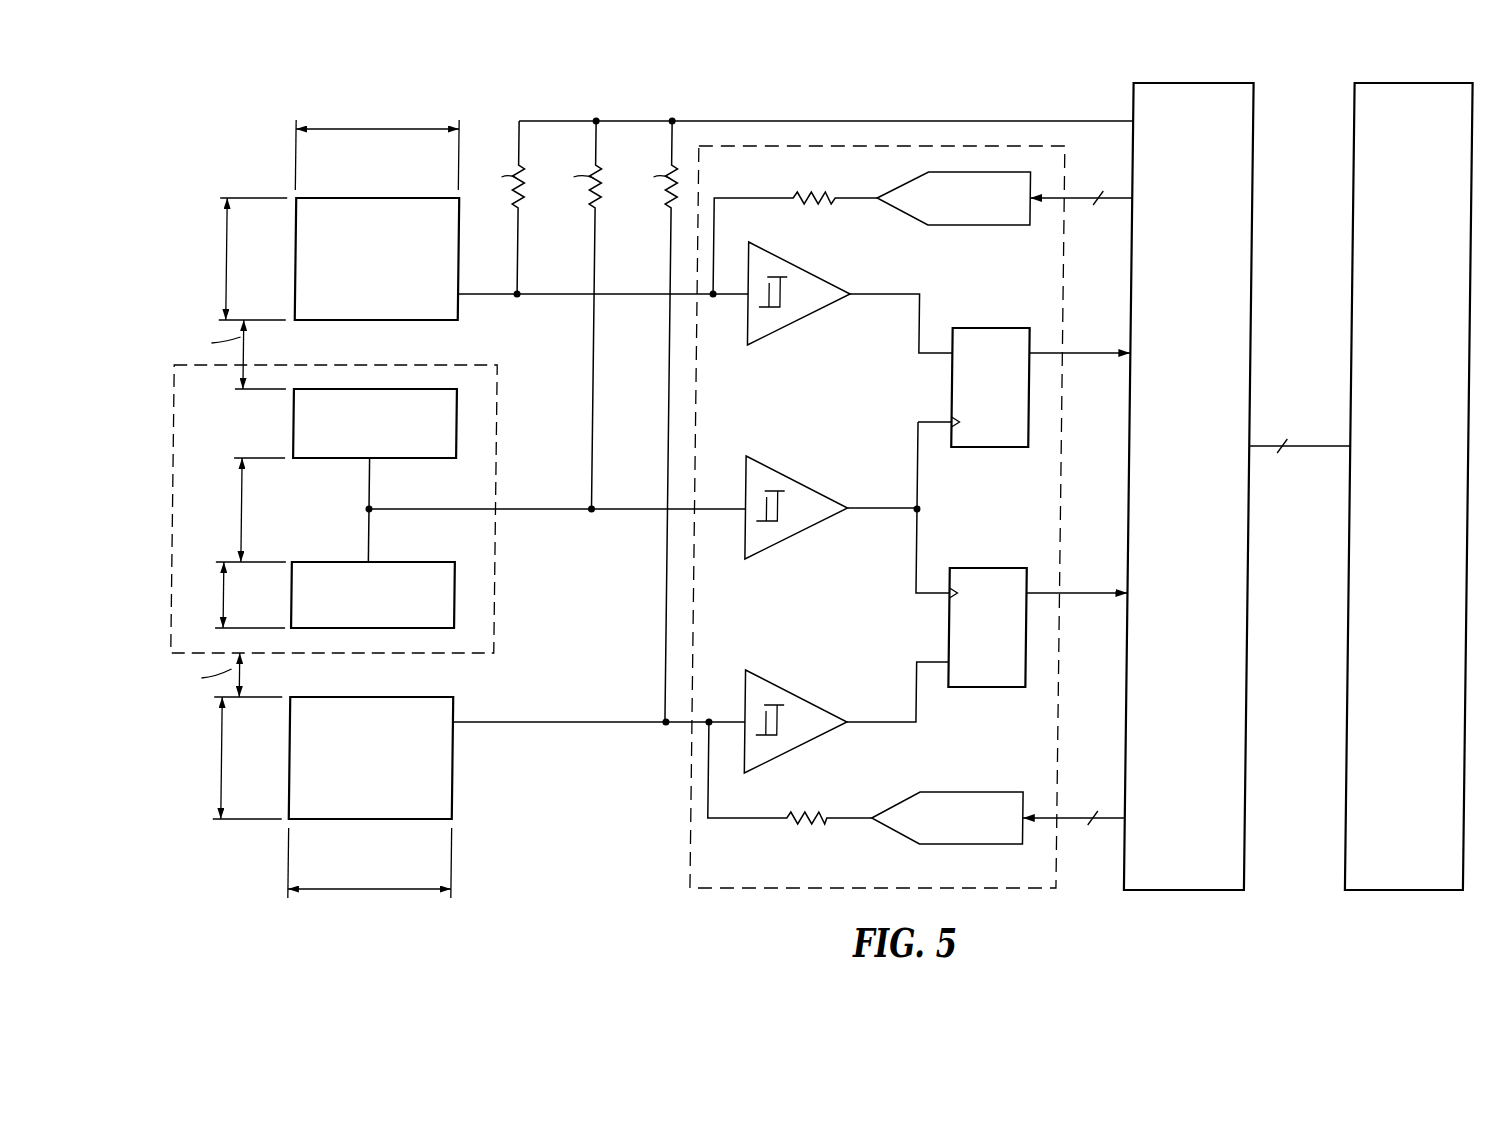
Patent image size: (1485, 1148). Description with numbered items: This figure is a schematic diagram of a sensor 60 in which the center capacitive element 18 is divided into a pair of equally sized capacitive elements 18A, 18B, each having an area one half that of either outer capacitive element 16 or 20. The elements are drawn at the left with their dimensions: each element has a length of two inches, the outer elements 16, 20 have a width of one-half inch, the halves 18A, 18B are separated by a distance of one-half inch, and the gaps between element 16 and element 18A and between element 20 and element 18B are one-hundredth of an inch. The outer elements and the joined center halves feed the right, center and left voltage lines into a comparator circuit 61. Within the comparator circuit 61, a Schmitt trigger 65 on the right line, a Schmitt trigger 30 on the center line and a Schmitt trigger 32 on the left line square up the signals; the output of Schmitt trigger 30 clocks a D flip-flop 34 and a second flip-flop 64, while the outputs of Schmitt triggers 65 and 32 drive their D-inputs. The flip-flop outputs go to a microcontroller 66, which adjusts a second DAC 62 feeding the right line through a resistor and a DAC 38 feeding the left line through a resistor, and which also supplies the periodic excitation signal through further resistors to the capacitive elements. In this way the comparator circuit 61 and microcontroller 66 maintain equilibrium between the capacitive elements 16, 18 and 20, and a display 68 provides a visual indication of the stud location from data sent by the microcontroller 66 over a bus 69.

The capacitive element 16 is at (412, 238).
The center capacitive element 18 is at (500, 606).
The capacitive element 18A is at (401, 443).
The capacitive element 18B is at (391, 615).
The capacitive element 20 is at (401, 796).
The Schmitt trigger 30 is at (787, 474).
The Schmitt trigger 32 is at (787, 688).
The D flip-flop 34 is at (978, 408).
The digital-to-analog converter 38 is at (1006, 791).
The sensor 60 is at (582, 885).
The comparator circuit 61 is at (746, 870).
The second DAC 62 is at (1000, 226).
The second flip-flop 64 is at (981, 643).
The Schmitt trigger 65 is at (800, 318).
The microcontroller 66 is at (1201, 855).
The display 68 is at (1423, 855).
The bus 69 is at (1307, 448).